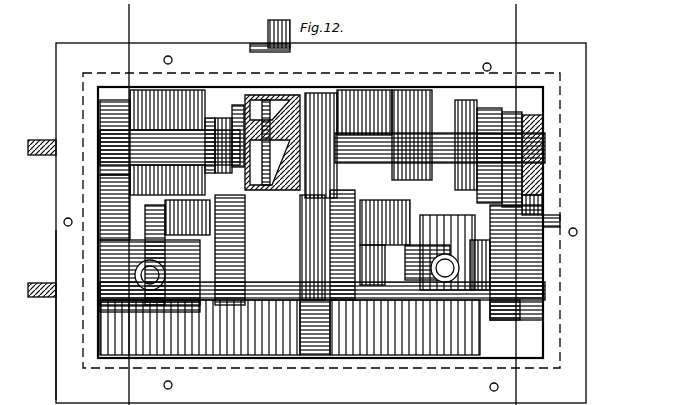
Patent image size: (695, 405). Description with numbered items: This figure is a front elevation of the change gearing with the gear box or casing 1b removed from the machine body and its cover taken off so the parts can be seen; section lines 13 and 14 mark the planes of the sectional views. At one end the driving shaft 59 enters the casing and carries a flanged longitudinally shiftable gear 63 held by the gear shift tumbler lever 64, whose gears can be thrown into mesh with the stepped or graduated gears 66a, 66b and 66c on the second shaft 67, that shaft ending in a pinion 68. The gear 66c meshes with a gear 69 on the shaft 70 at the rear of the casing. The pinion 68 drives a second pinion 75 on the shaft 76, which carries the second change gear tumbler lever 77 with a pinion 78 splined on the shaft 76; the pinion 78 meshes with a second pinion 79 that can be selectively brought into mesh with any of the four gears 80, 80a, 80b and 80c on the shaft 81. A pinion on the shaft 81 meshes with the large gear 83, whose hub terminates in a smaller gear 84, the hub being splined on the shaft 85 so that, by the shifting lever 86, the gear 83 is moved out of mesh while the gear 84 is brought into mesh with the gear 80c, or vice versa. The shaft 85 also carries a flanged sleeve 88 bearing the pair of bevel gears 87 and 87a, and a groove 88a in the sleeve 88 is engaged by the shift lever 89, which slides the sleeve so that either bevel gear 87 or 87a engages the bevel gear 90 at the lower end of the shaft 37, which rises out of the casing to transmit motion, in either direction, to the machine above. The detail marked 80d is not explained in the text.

The gear box 13 is at (88, 33).
The section line 14 is at (570, 38).
The shaft 70 is at (42, 134).
The driving shaft 59 is at (40, 290).
The gear box or casing 1b is at (56, 262).
The shaft 37 is at (268, 33).
The groove 88a is at (260, 44).
The shaft 85 is at (168, 128).
The shift lever 89 is at (210, 118).
The bevel gear 87 is at (224, 116).
The bevel gear 90 is at (240, 104).
The flanged sleeve 88 is at (290, 94).
The bevel gear 87a is at (330, 92).
The shaft 81 is at (366, 130).
The large gear 83 is at (400, 118).
The shifting lever 86 is at (460, 112).
The gear 80a is at (480, 128).
The gear or pinion 84 is at (496, 118).
The gear 80c is at (518, 112).
The gear 80b is at (543, 190).
The gear 80 is at (545, 206).
The second pinion 79 is at (560, 220).
The flanged longitudinally shiftable gear 63 is at (100, 262).
The second shaft 67 is at (165, 276).
The gear shift tumbler lever 64 is at (100, 306).
The stepped gear 66a is at (165, 212).
The stepped gear 66b is at (245, 218).
The gear 69 is at (308, 200).
The stepped gear 66c is at (330, 228).
The pinion 68 is at (386, 220).
The shaft 76 is at (412, 256).
The second change gear tumbler lever 77 is at (444, 300).
The pinion 78 is at (468, 300).
The gear 80d is at (500, 310).
The second pinion 75 is at (332, 292).